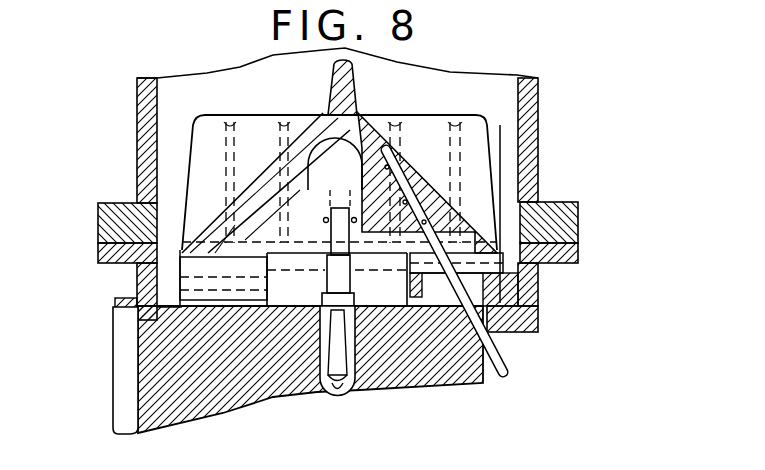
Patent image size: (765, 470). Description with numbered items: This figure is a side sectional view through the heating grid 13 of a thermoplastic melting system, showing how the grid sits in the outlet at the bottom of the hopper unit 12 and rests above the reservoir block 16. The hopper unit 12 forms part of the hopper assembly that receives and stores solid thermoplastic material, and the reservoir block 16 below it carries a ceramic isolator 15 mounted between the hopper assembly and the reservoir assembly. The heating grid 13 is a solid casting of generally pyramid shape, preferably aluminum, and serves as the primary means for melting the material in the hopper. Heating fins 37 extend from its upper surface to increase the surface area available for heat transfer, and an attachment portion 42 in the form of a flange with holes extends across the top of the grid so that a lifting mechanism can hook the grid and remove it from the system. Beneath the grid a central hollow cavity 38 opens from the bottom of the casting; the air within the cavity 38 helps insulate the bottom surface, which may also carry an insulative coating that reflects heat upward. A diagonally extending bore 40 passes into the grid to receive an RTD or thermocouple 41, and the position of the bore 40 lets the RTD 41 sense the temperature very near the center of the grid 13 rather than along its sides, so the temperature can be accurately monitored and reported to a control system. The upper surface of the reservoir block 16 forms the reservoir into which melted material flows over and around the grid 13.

The hopper unit 12 is at (209, 79).
The heating grid 13 is at (411, 125).
The ceramic isolator 15 is at (98, 238).
The reservoir block 16 is at (147, 371).
The heating fin 37 is at (200, 118).
The central hollow cavity 38 is at (293, 190).
The diagonally extending bore 40 is at (518, 290).
The RTD or thermocouple 41 is at (504, 364).
The attachment portion 42 is at (331, 82).